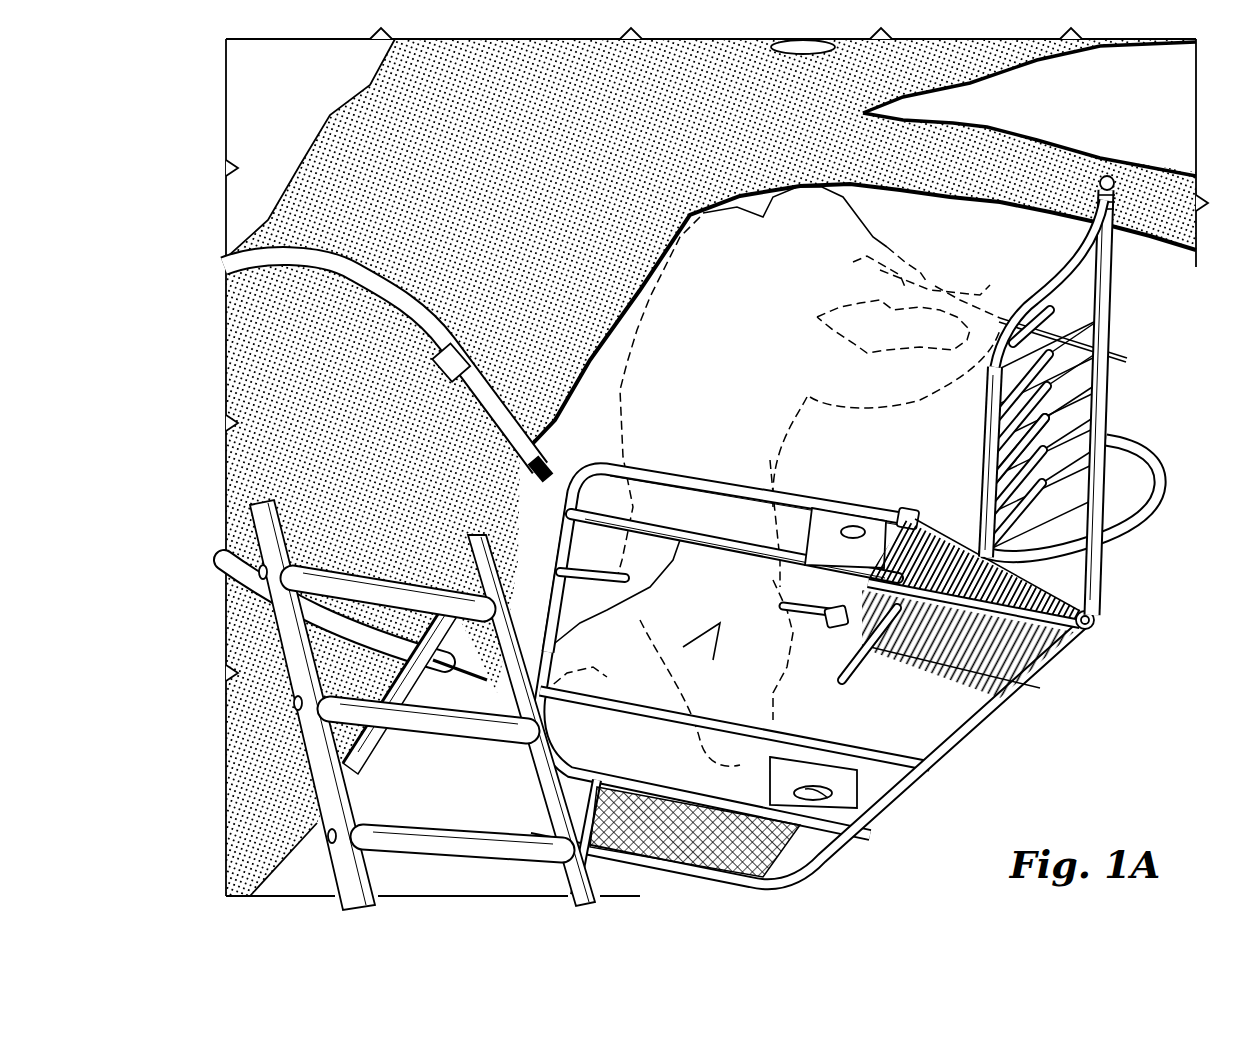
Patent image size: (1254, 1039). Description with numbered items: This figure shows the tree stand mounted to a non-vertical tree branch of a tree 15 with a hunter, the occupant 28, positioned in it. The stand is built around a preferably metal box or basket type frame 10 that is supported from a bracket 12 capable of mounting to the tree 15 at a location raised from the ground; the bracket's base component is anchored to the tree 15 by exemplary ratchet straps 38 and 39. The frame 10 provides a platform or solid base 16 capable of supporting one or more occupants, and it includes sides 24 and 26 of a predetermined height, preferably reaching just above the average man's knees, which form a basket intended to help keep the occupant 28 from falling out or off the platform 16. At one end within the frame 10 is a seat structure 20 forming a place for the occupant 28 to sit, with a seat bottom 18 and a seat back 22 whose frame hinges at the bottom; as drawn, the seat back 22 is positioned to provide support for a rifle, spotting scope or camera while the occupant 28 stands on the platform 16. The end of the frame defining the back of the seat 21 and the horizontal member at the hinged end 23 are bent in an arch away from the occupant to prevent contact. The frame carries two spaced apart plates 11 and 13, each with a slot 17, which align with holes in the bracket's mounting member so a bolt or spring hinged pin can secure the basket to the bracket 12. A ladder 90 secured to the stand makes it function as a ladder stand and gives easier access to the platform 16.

The frame 10 is at (878, 559).
The plate 11 is at (827, 510).
The bracket 12 is at (563, 465).
The plate 13 is at (795, 768).
The tree 15 is at (366, 108).
The platform 16 is at (700, 847).
The slot 17 is at (855, 520).
The seat bottom 18 is at (990, 633).
The seat structure 20 is at (1105, 395).
The back of the seat 21 is at (1048, 270).
The seat back 22 is at (1063, 377).
The hinged end 23 is at (1105, 619).
The side 24 is at (757, 490).
The side 26 is at (610, 573).
The occupant 28 is at (860, 214).
The ratchet strap 38 is at (265, 258).
The ratchet strap 39 is at (300, 641).
The ladder 90 is at (338, 860).